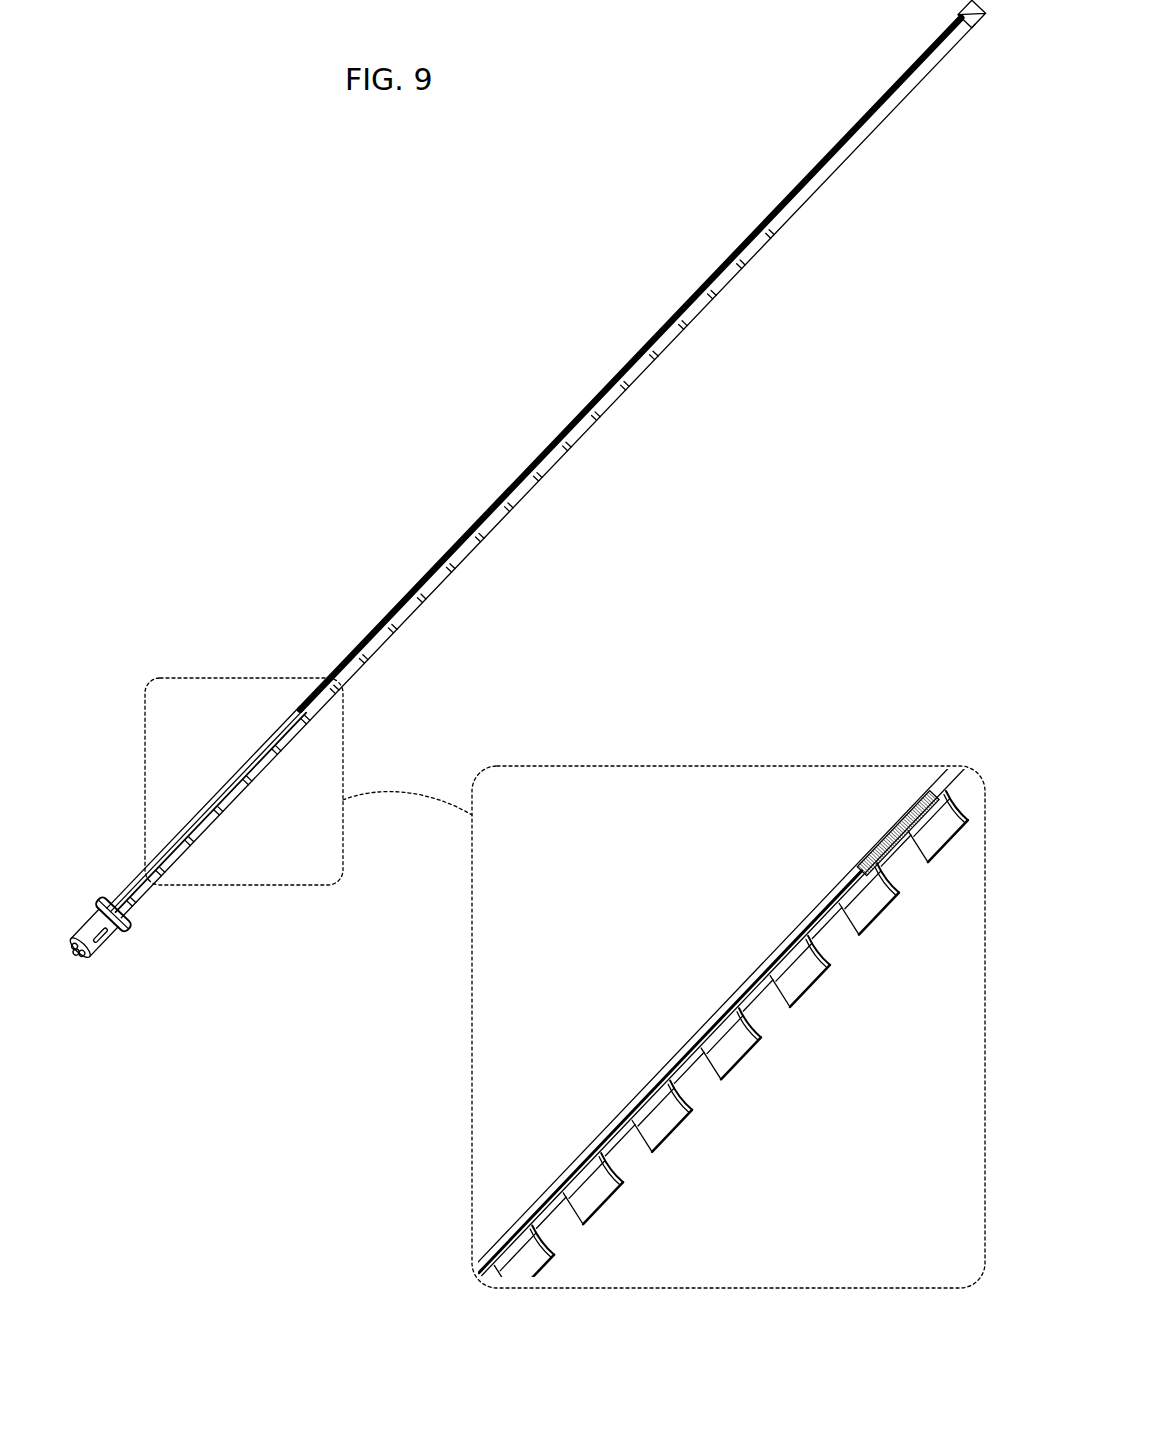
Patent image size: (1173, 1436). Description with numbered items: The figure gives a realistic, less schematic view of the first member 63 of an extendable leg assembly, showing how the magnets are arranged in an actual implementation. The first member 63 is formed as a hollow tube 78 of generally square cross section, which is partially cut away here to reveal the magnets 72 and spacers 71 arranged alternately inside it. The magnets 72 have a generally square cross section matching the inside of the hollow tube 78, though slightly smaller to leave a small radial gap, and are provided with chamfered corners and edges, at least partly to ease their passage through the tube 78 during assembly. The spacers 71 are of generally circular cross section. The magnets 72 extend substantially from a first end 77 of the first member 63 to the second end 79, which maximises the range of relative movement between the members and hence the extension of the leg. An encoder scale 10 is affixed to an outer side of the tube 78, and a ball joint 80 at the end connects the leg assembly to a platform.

The first member 63 is at (265, 350).
The encoder scale 10 is at (600, 392).
The spacers 71 is at (410, 612).
The magnets 72 is at (275, 760).
The first end 77 is at (978, 37).
The hollow tube 78 is at (800, 203).
The second end 79 is at (125, 918).
The ball joints 80 is at (77, 962).